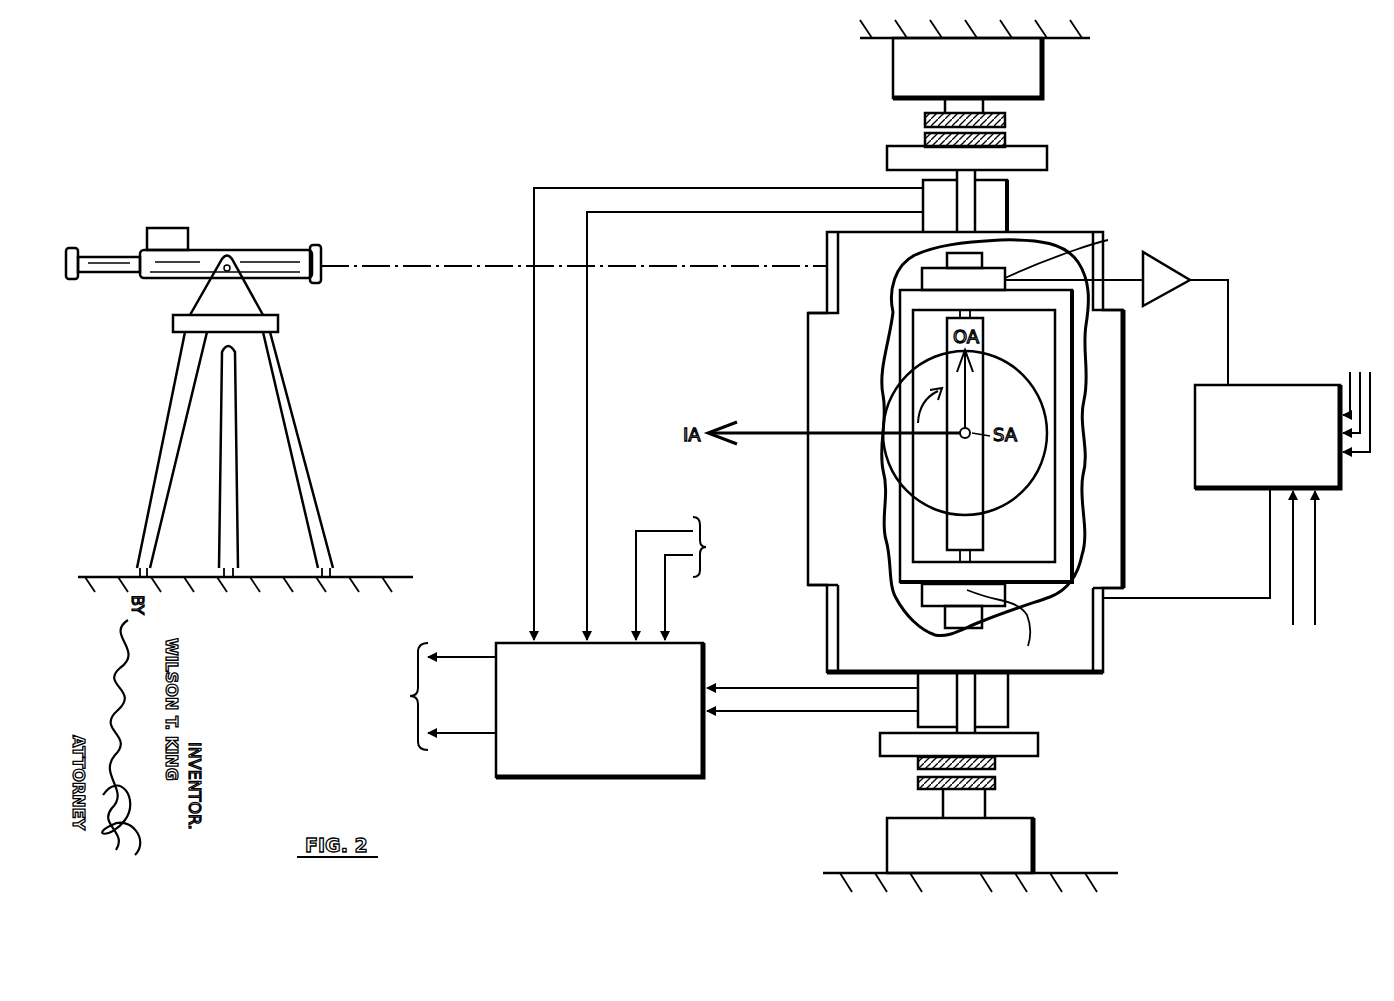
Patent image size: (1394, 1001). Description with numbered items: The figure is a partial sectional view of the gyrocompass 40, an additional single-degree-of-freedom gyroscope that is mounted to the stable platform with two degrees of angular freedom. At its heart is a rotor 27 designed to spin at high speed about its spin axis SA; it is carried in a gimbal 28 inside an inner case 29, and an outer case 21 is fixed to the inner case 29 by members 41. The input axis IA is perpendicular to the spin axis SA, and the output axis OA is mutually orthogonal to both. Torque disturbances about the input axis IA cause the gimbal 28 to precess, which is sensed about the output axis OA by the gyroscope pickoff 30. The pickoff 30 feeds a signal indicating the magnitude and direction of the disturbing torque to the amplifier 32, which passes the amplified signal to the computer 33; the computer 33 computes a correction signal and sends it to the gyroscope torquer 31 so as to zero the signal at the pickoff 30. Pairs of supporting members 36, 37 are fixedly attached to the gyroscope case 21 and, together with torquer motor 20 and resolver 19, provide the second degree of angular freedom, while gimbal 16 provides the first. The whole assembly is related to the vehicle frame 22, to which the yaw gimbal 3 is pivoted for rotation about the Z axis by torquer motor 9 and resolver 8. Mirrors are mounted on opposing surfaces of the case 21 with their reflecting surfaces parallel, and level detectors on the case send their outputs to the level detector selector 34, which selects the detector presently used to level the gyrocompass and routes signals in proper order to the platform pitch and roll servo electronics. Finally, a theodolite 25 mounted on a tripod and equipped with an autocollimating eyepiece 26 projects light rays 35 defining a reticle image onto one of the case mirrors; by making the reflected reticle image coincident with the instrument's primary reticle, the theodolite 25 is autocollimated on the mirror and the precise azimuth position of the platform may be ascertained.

The yaw gimbal 3 is at (925, 120).
The resolver 8 is at (998, 52).
The torquer motor 9 is at (993, 830).
The gimbal 16 is at (925, 140).
The resolver 19 is at (1028, 157).
The torquer motor 20 is at (1027, 748).
The gyroscope case 21 is at (1107, 546).
The vehicle frame 22 is at (972, 897).
The theodolite 25 is at (220, 240).
The autocollimating eyepiece 26 is at (165, 243).
The rotor 27 is at (1012, 476).
The gimbal 28 is at (963, 535).
The inner case 29 is at (1063, 322).
The gyroscope pickoff 30 is at (1136, 252).
The gyroscope torquer 31 is at (957, 627).
The amplifier 32 is at (1158, 270).
The computer 33 is at (1277, 466).
The level detector selector 34 is at (586, 753).
The light rays 35 is at (643, 268).
The supporting members 36 is at (968, 202).
The supporting members 37 is at (965, 695).
The gyrocompass 40 is at (1123, 465).
The members 41 is at (947, 254).